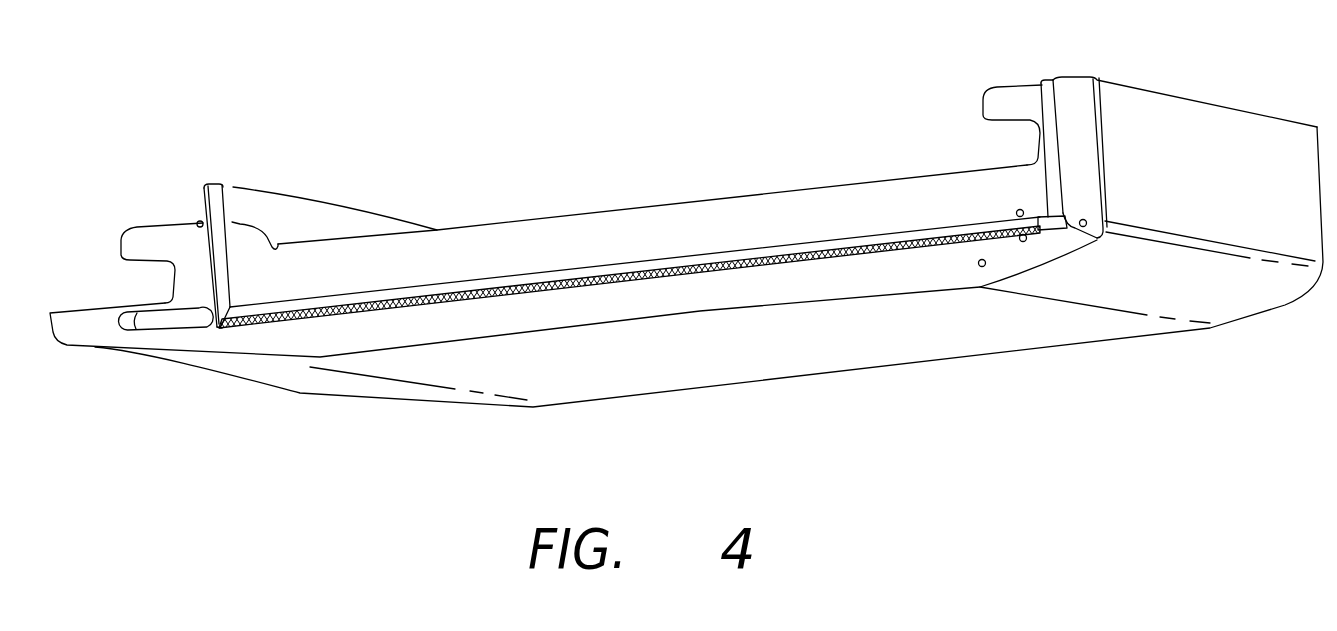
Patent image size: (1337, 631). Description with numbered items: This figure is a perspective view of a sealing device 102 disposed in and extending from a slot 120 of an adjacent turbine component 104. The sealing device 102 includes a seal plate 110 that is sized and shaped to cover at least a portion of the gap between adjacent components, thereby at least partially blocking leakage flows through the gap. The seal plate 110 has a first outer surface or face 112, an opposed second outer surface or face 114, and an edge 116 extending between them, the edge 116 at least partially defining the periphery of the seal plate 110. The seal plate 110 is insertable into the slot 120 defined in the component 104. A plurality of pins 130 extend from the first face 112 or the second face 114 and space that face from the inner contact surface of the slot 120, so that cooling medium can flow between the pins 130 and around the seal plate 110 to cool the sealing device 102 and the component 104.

The sealing device 102 is at (593, 267).
The component 104 is at (1162, 80).
The seal plate 110 is at (777, 256).
The first outer surface or face 112 is at (1047, 230).
The second outer surface or face 114 is at (1053, 213).
The edge 116 is at (1060, 233).
The slot 120 is at (216, 248).
The pins 130 is at (895, 255).